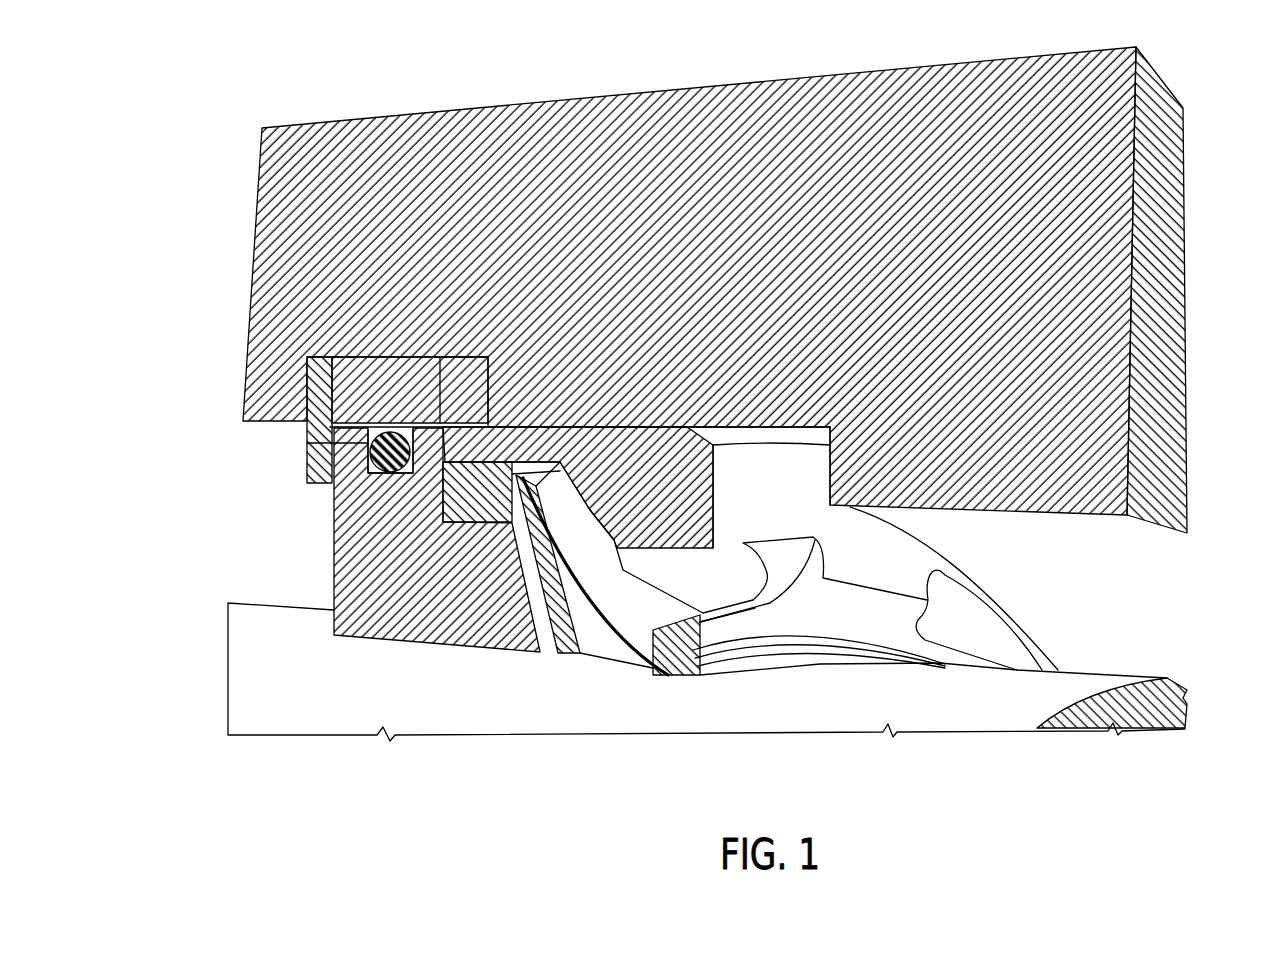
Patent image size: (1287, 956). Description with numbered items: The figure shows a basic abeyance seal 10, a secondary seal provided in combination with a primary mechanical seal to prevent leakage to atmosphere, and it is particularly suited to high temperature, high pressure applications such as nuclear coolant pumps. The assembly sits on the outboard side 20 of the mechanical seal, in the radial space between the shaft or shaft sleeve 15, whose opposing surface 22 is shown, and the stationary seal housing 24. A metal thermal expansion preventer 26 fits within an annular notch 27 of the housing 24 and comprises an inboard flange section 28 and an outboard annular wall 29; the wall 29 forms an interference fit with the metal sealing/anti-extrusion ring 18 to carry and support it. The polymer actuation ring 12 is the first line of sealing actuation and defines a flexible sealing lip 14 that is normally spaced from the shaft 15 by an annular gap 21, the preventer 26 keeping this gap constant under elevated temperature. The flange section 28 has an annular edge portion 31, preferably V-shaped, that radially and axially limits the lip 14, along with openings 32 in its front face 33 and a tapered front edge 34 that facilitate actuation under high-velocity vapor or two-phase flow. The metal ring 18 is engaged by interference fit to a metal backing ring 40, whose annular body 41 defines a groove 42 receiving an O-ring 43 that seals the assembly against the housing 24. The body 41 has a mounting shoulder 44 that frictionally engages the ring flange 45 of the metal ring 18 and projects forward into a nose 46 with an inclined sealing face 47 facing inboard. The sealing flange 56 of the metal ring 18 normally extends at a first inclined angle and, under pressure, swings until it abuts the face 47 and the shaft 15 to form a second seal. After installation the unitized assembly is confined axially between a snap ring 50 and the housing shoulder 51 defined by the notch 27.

The abeyance seal 10 is at (641, 245).
The seal housing 24 is at (1097, 220).
The snap ring 50 is at (373, 372).
The metal backing ring 40 is at (440, 400).
The outboard side 20 is at (368, 611).
The groove 42 is at (380, 475).
The O-ring 43 is at (307, 443).
The ring flange 45 is at (490, 450).
The outboard annular wall 29 is at (548, 428).
The polymer actuation ring 12 is at (652, 510).
The mounting shoulder 44 is at (488, 527).
The sealing flange 56 is at (593, 643).
The metal sealing/anti-extrusion ring 18 is at (640, 565).
The inclined sealing face 47 is at (551, 640).
The annular edge portion 31 is at (640, 690).
The flexible sealing lip 14 is at (672, 686).
The nose 46 is at (527, 523).
The annular body 41 is at (450, 640).
The openings 32 is at (770, 592).
The front face 33 is at (897, 573).
The annular gap 21 is at (729, 678).
The tapered front edge 34 is at (853, 570).
The inboard flange section 28 is at (873, 627).
The metal thermal expansion preventer 26 is at (930, 500).
The annular notch 27 is at (832, 462).
The housing shoulder 51 is at (862, 473).
The shaft or shaft sleeve 15 is at (360, 712).
The opposing surface 22 is at (1012, 718).